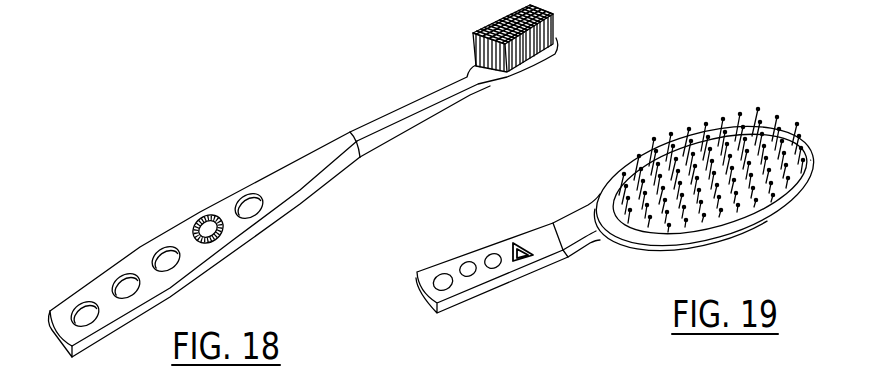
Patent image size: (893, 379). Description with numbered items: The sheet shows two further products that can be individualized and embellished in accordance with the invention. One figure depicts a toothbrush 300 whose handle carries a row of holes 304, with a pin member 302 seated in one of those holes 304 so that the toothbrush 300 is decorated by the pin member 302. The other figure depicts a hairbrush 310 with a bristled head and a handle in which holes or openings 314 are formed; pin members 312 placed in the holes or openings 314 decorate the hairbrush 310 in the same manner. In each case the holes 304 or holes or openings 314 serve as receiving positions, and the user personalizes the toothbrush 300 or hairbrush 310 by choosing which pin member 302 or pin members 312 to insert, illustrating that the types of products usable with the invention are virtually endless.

In FIG. 18, the toothbrush 300 is at (334, 172).
In FIG. 18, the pin member 302 is at (200, 214).
In FIG. 18, the holes 304 is at (117, 283).
In FIG. 19, the hairbrush 310 is at (634, 245).
In FIG. 19, the pin members 312 is at (525, 262).
In FIG. 19, the holes or openings 314 is at (446, 283).